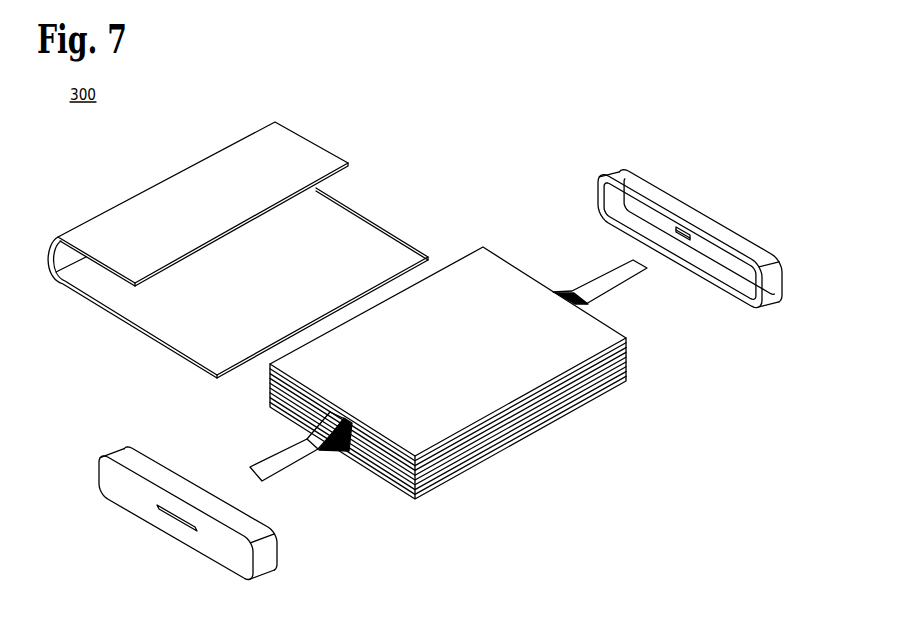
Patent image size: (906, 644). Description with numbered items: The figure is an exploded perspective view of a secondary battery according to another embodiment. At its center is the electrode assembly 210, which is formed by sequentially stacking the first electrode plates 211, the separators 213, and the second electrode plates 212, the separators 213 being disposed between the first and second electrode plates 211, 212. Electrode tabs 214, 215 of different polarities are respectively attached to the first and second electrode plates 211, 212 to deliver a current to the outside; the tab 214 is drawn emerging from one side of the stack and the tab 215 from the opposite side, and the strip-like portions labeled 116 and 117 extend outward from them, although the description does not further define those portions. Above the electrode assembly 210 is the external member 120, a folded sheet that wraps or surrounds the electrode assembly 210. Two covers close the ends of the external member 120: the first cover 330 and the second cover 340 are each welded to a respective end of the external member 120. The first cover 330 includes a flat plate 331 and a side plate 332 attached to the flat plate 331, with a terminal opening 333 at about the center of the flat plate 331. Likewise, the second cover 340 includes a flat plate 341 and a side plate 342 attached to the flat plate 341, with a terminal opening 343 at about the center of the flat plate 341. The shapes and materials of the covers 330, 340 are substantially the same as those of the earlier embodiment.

The external member 120 is at (127, 199).
The electrode assembly 210 is at (468, 384).
The first electrode plates 211 is at (627, 381).
The second electrode plates 212 is at (624, 365).
The separators 213 is at (568, 387).
The electrode tab 214 is at (585, 303).
The electrode tab 215 is at (340, 451).
The electrode tab 116 is at (610, 294).
The electrode tab 117 is at (301, 463).
The first cover 330 is at (688, 215).
The flat plate 331 is at (737, 262).
The side plate 332 is at (764, 252).
The terminal opening 333 is at (686, 225).
The second cover 340 is at (167, 527).
The flat plate 341 is at (213, 553).
The side plate 342 is at (267, 561).
The terminal opening 343 is at (113, 505).